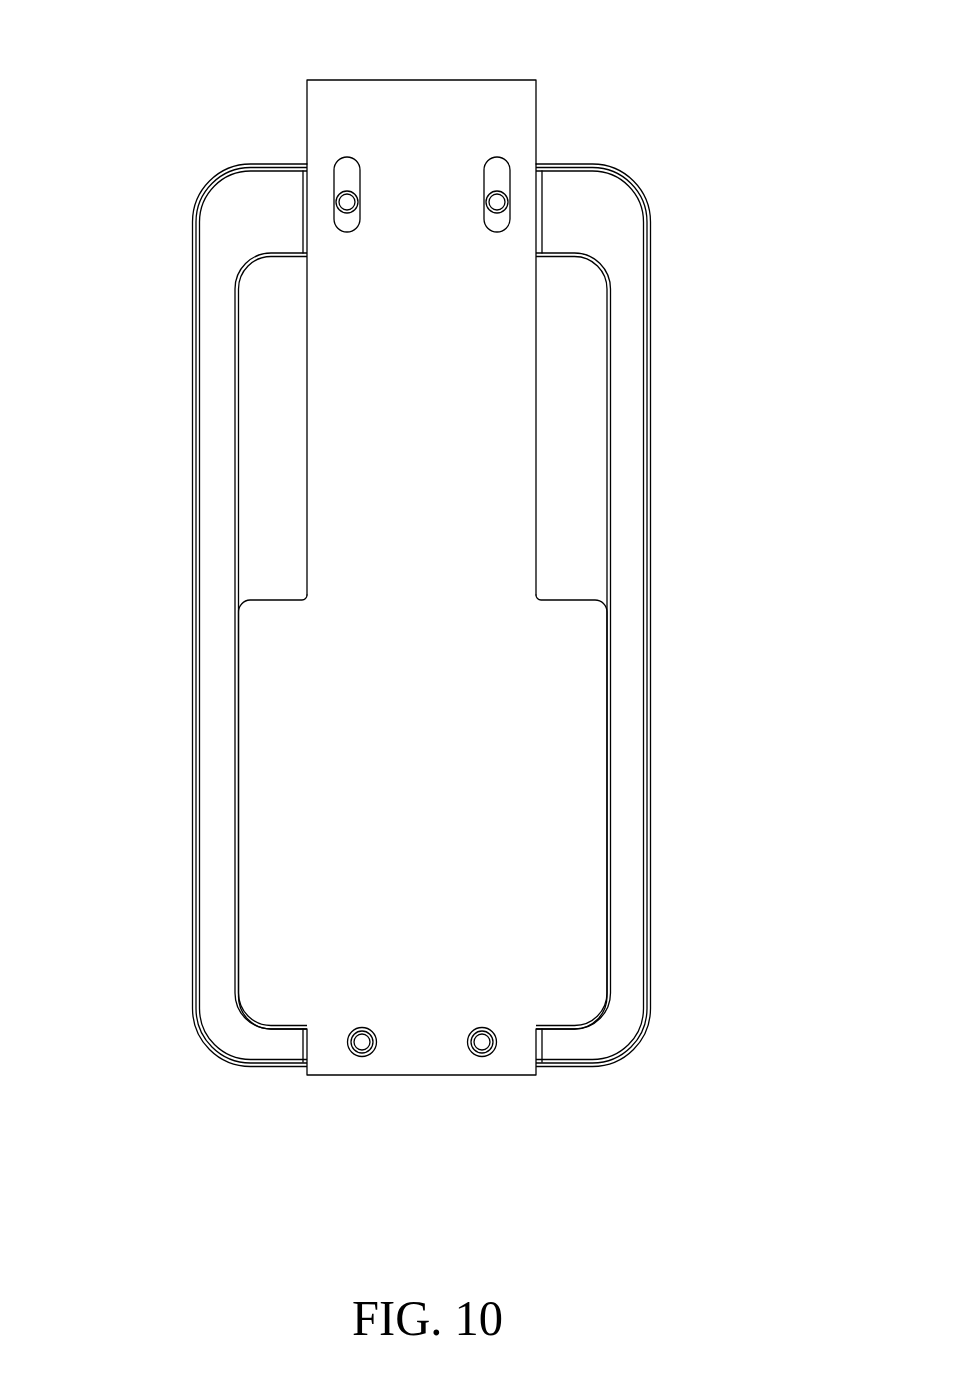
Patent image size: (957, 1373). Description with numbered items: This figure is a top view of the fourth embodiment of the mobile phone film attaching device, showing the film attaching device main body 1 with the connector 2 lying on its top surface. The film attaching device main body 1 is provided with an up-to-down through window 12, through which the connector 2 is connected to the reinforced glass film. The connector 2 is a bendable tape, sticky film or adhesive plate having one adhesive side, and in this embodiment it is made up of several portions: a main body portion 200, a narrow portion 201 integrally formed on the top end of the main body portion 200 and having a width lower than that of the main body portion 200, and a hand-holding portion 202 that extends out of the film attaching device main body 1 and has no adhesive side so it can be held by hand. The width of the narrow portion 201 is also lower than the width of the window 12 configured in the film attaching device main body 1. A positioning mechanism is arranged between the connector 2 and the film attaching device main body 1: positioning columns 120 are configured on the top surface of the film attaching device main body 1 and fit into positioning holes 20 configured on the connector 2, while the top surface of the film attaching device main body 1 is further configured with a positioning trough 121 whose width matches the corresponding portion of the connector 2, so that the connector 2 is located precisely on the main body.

The film attaching device main body 1 is at (650, 618).
The window 12 is at (588, 449).
The positioning columns 120 is at (350, 193).
The positioning trough 121 is at (542, 212).
The connector 2 is at (354, 559).
The positioning holes 20 is at (340, 174).
The main body portion 200 is at (347, 835).
The narrow portion 201 is at (313, 523).
The hand-holding portion 202 is at (536, 91).